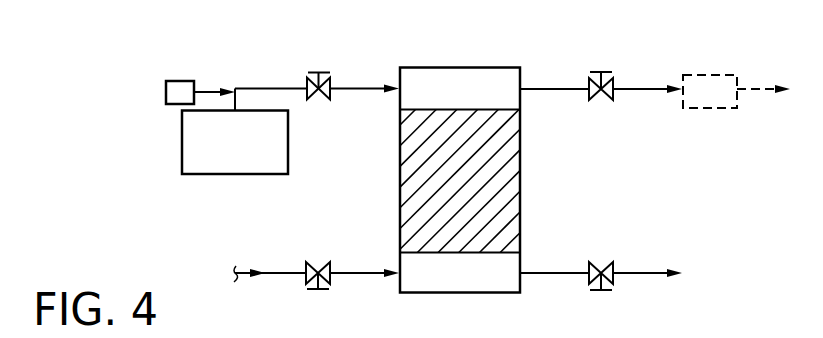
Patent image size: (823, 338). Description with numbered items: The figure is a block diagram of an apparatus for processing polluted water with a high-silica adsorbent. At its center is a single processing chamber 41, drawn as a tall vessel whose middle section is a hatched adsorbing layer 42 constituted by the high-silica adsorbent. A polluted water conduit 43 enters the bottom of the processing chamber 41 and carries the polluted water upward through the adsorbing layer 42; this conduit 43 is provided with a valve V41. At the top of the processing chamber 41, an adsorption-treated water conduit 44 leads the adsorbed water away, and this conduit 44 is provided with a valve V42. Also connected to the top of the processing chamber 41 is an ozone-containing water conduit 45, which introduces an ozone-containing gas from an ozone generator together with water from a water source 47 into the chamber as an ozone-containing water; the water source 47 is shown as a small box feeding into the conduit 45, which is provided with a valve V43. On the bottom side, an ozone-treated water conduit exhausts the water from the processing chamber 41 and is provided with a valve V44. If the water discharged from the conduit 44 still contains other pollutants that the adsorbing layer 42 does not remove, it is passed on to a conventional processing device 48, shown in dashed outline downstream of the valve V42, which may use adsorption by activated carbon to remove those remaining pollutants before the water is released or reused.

The processing chamber 41 is at (398, 178).
The adsorbing layer 42 is at (515, 190).
The polluted water conduit 43 is at (280, 272).
The adsorption-treated water conduit 44 is at (645, 92).
The ozone-containing water conduit 45 is at (262, 88).
The water source 47 is at (166, 88).
The conventional processing device 48 is at (715, 75).
The valve V41 is at (330, 275).
The valve V42 is at (598, 72).
The valve V43 is at (317, 72).
The valve V44 is at (588, 277).